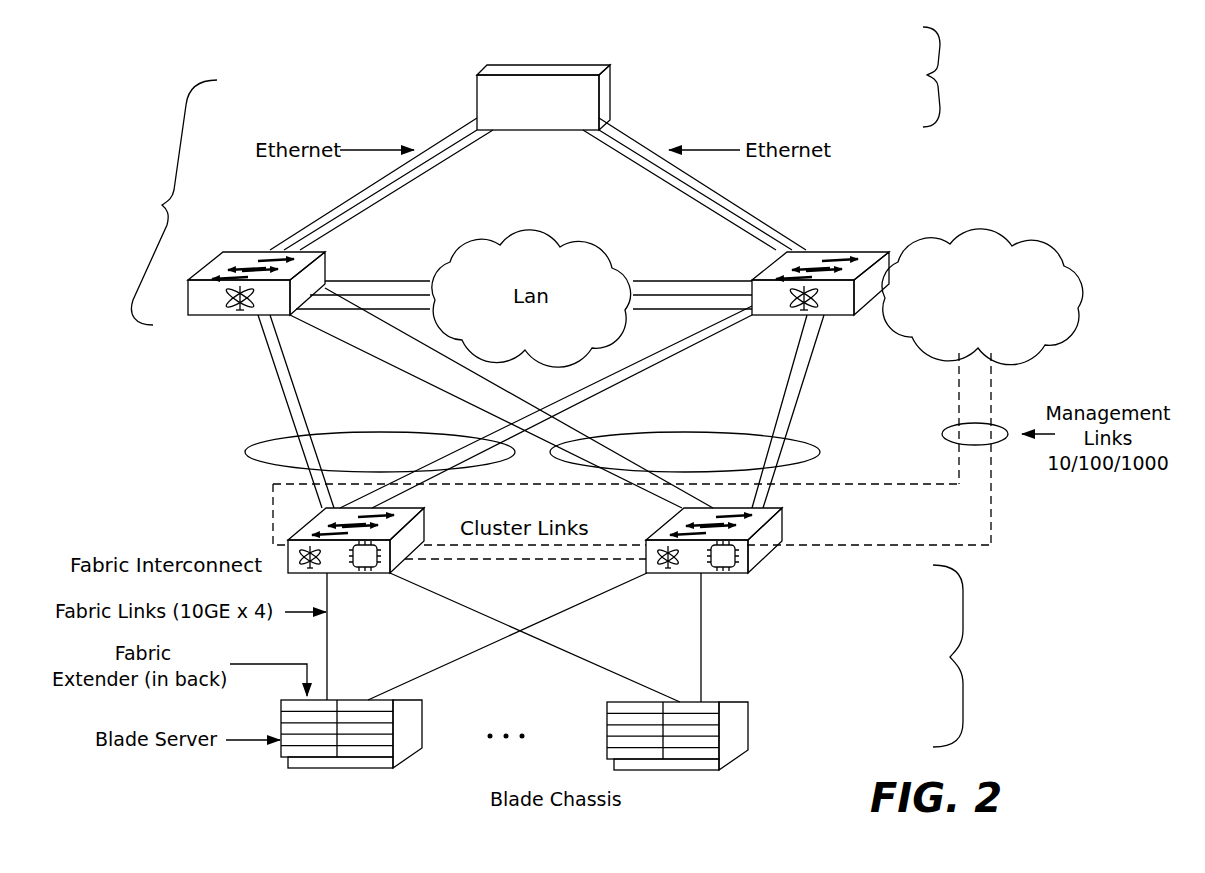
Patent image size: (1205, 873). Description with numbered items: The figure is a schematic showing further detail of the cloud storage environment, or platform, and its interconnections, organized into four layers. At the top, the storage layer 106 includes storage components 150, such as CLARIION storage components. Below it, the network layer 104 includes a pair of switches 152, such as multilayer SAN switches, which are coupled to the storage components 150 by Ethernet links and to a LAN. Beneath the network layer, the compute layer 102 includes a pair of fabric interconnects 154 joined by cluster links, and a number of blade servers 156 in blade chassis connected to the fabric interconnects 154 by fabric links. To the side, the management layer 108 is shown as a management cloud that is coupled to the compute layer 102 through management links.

The compute layer 102 is at (1000, 656).
The network layer 104 is at (146, 202).
The storage layer 106 is at (976, 77).
The management layer 108 is at (1084, 283).
The storage components 150 is at (596, 66).
The switches 152 is at (238, 250).
The fabric interconnects 154 is at (346, 575).
The blade servers 156 is at (327, 770).